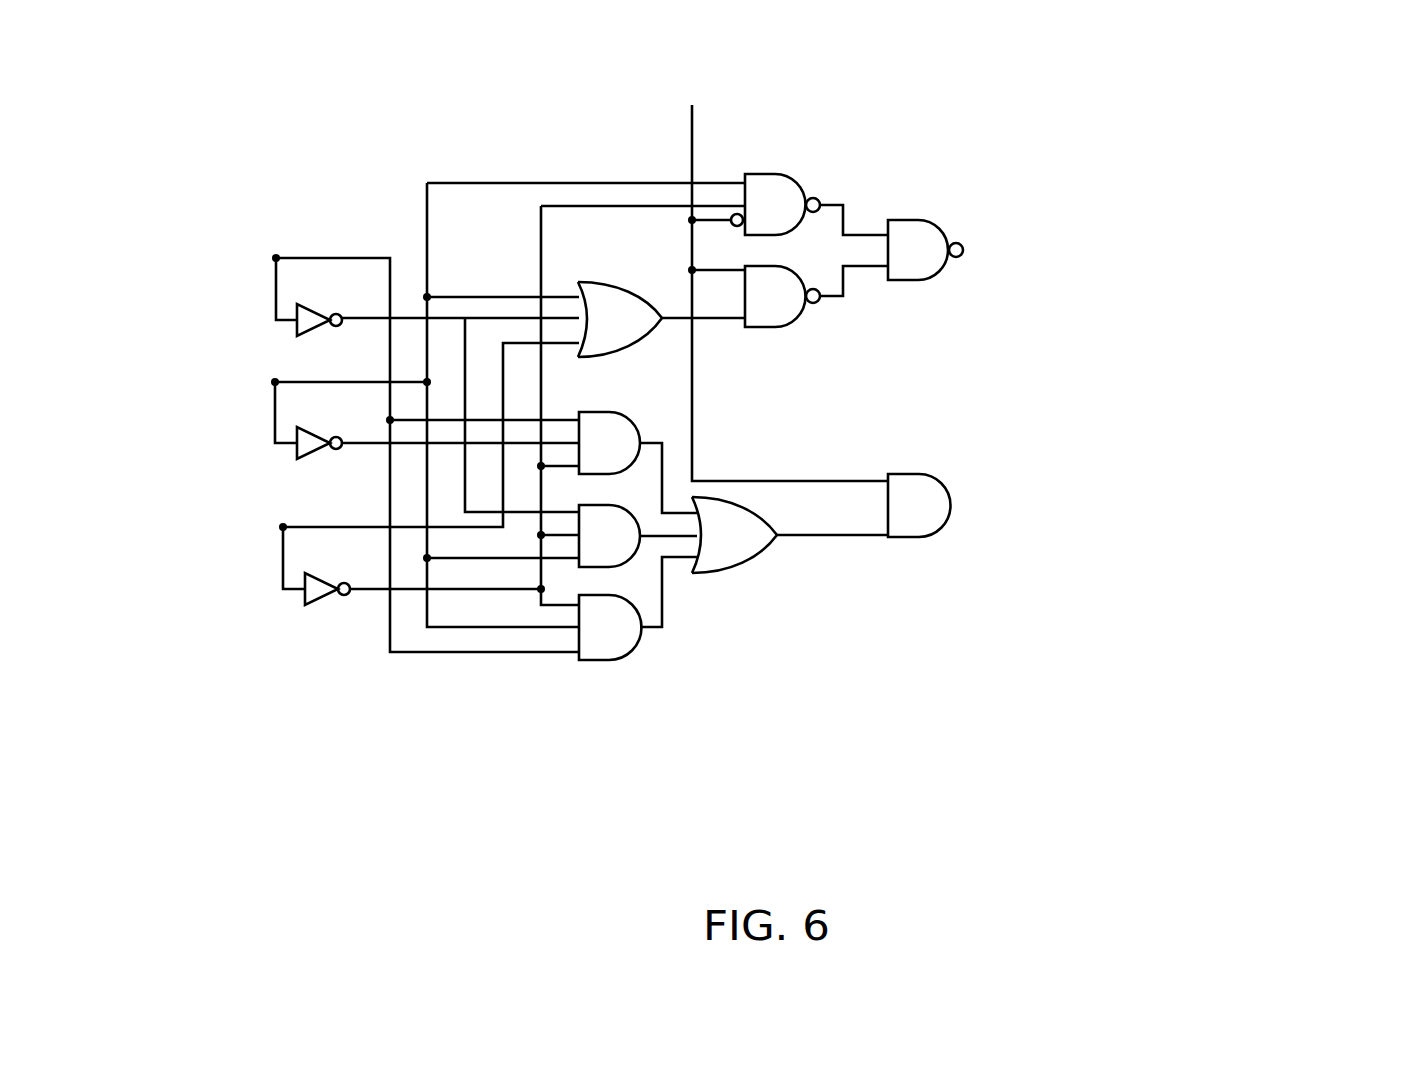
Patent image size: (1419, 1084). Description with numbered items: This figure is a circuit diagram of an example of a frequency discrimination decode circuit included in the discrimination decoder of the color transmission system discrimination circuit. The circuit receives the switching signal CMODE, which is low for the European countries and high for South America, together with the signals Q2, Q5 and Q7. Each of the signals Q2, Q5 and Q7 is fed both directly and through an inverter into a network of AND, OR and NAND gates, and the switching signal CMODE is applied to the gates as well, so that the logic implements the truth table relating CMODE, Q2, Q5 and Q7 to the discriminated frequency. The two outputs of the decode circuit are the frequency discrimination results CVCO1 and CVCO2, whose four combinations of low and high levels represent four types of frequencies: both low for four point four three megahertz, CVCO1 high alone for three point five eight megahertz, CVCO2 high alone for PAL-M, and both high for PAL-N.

The switching signal CMODE is at (692, 105).
The signal Q2 is at (276, 258).
The signal Q5 is at (275, 382).
The signal Q7 is at (283, 527).
The frequency discrimination result output CVCO1 is at (963, 250).
The frequency discrimination result output CVCO2 is at (950, 505).